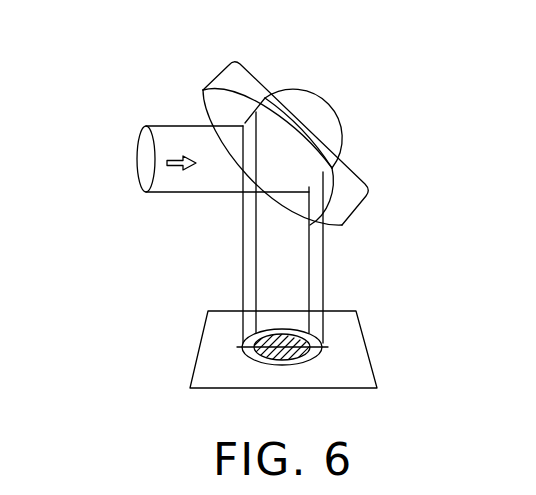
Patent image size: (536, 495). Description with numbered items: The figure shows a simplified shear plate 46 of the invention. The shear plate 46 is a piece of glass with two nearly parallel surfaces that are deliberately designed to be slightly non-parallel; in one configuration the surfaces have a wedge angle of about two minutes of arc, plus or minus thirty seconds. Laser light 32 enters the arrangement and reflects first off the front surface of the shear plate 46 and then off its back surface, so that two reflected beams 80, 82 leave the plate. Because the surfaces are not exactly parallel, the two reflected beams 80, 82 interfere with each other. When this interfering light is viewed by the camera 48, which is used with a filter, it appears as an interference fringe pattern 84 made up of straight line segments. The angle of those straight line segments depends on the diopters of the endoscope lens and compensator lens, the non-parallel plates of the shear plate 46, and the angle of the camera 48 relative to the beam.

The laser light 32 is at (138, 141).
The shear plate 46 is at (252, 82).
The camera 48 is at (203, 323).
The reflected beam 80 is at (242, 261).
The reflected beam 82 is at (323, 253).
The interference fringe pattern 84 is at (295, 336).